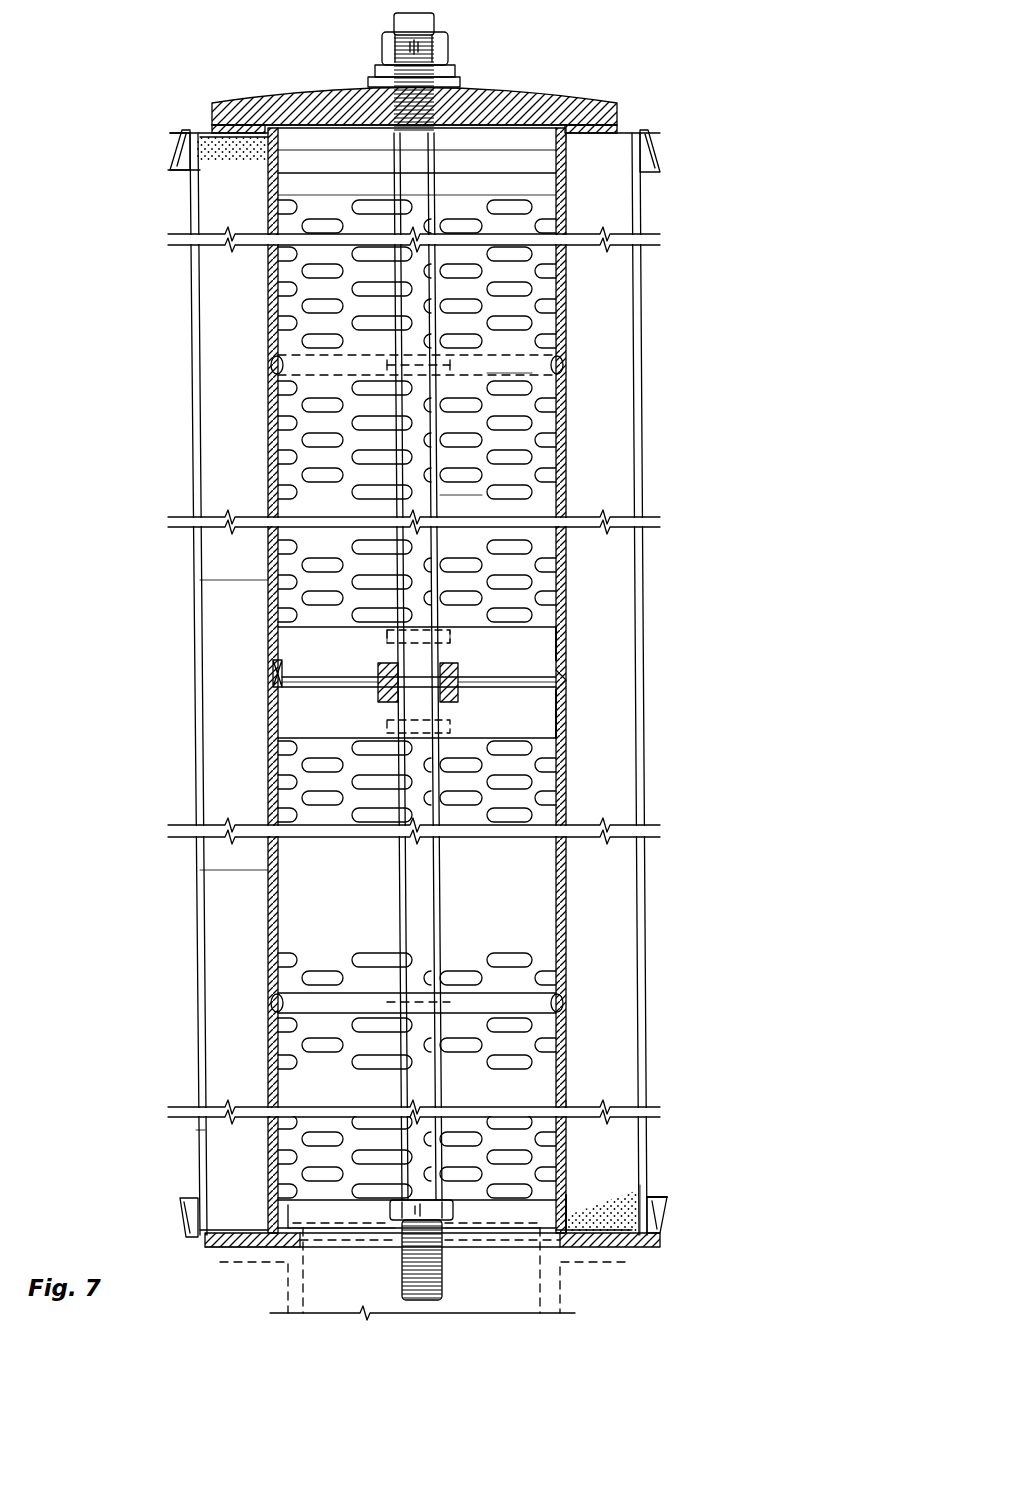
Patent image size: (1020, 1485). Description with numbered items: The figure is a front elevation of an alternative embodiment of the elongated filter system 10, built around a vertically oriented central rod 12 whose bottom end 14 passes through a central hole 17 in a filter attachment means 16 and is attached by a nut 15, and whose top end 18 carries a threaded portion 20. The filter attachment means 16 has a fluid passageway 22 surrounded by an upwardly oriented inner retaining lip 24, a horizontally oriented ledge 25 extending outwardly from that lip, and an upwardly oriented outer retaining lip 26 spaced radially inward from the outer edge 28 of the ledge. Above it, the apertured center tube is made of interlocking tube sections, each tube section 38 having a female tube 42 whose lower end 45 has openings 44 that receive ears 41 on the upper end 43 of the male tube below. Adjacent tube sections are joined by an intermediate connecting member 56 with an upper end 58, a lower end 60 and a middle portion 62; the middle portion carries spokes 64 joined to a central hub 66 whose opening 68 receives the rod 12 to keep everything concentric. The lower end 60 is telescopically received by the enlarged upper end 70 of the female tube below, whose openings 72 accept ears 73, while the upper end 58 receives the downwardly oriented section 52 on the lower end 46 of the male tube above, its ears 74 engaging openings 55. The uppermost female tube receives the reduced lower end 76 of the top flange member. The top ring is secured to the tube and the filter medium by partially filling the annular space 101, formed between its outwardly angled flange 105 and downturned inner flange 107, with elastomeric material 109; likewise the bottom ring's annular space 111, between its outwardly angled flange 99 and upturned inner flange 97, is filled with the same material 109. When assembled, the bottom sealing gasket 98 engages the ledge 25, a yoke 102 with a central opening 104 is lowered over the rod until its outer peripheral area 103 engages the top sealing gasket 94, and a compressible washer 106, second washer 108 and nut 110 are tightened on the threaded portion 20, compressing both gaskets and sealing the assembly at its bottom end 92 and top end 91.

The filter system 10 is at (252, 38).
The central rod 12 is at (430, 887).
The bottom end 14 is at (446, 1297).
The nut 15 is at (460, 1245).
The filter attachment means 16 is at (562, 1283).
The central hole 17 is at (396, 1228).
The top end 18 is at (432, 18).
The threaded portion 20 is at (526, 103).
The fluid passageway 22 is at (303, 1286).
The inner retaining lip 24 is at (567, 1195).
The ledge 25 is at (632, 1242).
The outer retaining lip 26 is at (666, 1207).
The outer edge 28 is at (625, 1262).
The interlocking tube section 38 is at (512, 378).
The ears 41 is at (448, 368).
The female tube 42 is at (540, 292).
The upper end 43 is at (562, 368).
The openings 44 is at (387, 365).
The lower end 45 is at (270, 368).
The lower end 46 is at (566, 572).
The downwardly oriented section 52 is at (563, 635).
The openings 55 is at (452, 640).
The intermediate connecting member 56 is at (564, 678).
The upper end 58 is at (544, 651).
The lower end 60 is at (552, 732).
The middle portion 62 is at (566, 690).
The spokes 64 is at (300, 682).
The central hub 66 is at (380, 680).
The opening 68 is at (392, 700).
The upper end 70 is at (225, 212).
The openings 72 is at (460, 686).
The ears 73 is at (387, 727).
The ears 74 is at (387, 640).
The lower end 76 is at (650, 154).
The top end 91 is at (190, 246).
The bottom end 92 is at (205, 1130).
The top sealing gasket 94 is at (208, 130).
The upturned inner flange 97 is at (290, 1212).
The bottom sealing gasket 98 is at (218, 1252).
The outwardly angled flange 99 is at (656, 1202).
The annular space 101 is at (196, 188).
The yoke 102 is at (245, 108).
The outer peripheral area 103 is at (215, 124).
The central opening 104 is at (372, 95).
The outwardly angled flange 105 is at (172, 166).
The compressible washer 106 is at (456, 80).
The downturned inner flange 107 is at (283, 148).
The second washer 108 is at (447, 62).
The elastomeric material 109 is at (258, 168).
The nut 110 is at (450, 44).
The annular space 111 is at (633, 1186).